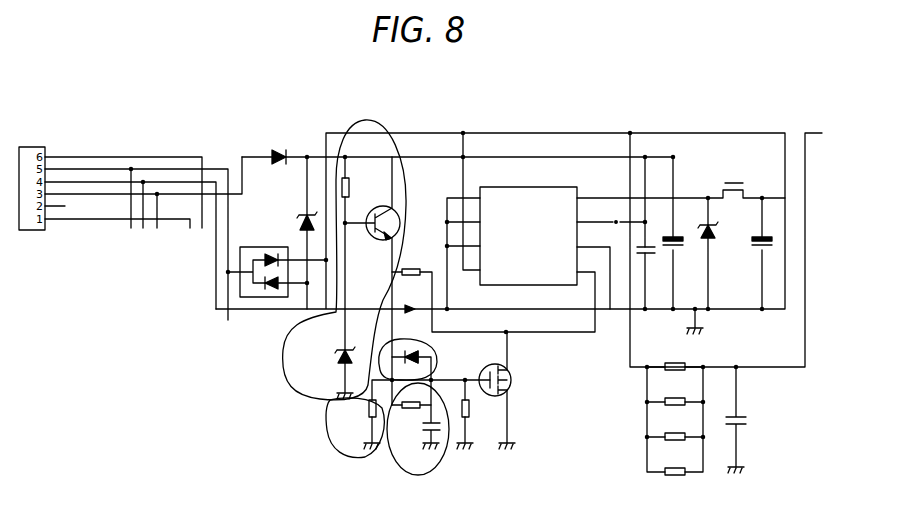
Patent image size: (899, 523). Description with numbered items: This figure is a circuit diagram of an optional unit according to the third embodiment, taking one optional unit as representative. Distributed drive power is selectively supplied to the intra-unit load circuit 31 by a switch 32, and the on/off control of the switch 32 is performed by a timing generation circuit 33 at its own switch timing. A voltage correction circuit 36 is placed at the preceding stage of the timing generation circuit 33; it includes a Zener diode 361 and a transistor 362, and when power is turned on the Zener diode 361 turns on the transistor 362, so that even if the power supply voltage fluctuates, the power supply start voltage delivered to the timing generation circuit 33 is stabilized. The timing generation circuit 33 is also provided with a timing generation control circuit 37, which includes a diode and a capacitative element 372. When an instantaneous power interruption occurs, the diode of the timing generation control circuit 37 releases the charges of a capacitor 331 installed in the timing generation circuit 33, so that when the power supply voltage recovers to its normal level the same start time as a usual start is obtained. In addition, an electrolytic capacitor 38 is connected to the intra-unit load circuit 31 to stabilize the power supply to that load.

The intra-unit load circuit 31 is at (553, 187).
The switch 32 is at (512, 388).
The timing generation circuit 33 is at (440, 472).
The capacitor 331 is at (430, 430).
The voltage correction circuit 36 is at (384, 120).
The Zener diode 361 is at (338, 358).
The transistor 362 is at (383, 240).
The timing generation control circuit 37 is at (352, 457).
The capacitative element 372 is at (368, 413).
The electrolytic capacitor 38 is at (684, 245).